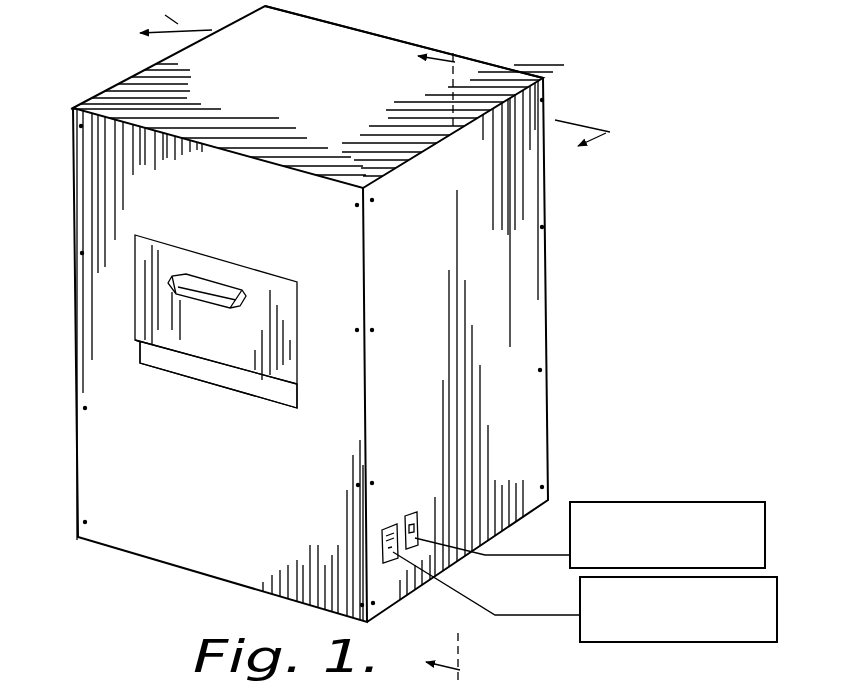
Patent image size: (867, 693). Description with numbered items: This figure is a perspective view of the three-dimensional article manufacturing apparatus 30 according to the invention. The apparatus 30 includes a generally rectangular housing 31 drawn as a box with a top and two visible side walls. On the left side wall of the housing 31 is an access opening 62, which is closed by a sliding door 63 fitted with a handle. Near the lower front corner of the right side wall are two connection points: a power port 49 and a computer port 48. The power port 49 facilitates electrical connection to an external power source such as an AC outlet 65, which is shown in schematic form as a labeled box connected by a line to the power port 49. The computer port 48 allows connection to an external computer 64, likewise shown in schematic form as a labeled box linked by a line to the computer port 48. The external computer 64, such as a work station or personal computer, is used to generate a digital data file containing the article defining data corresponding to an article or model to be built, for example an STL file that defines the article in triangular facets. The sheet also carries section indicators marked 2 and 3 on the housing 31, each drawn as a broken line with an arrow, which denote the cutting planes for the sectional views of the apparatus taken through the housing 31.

The three-dimensional article manufacturing apparatus 30 is at (556, 23).
The housing 31 is at (359, 47).
The access opening 62 is at (173, 364).
The sliding door 63 is at (152, 309).
The computer port 48 is at (417, 512).
The power port 49 is at (408, 521).
The external computer 64 is at (622, 480).
The AC outlet 65 is at (680, 642).
The section line 2- 2 is at (384, 73).
The section line 3- 3 is at (452, 364).